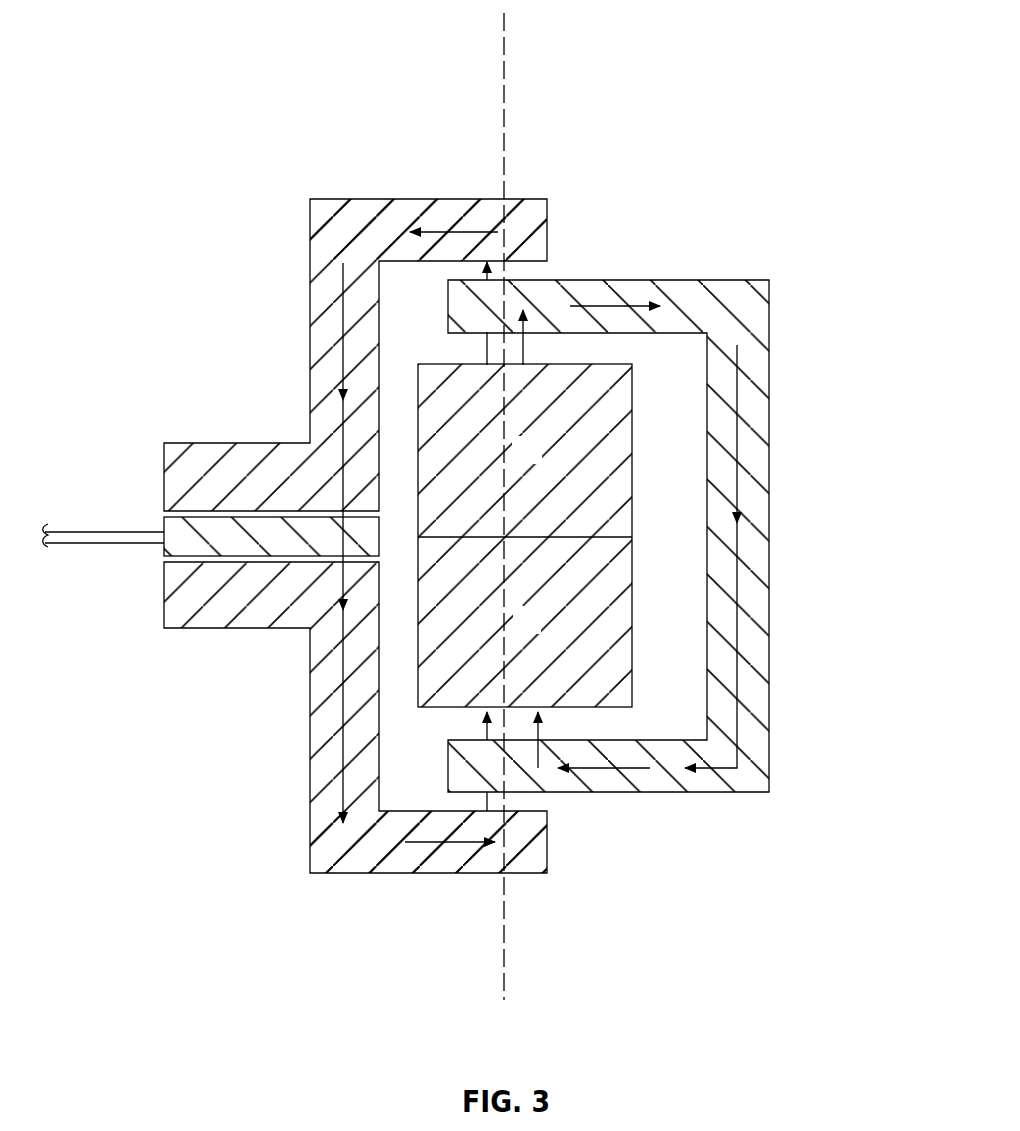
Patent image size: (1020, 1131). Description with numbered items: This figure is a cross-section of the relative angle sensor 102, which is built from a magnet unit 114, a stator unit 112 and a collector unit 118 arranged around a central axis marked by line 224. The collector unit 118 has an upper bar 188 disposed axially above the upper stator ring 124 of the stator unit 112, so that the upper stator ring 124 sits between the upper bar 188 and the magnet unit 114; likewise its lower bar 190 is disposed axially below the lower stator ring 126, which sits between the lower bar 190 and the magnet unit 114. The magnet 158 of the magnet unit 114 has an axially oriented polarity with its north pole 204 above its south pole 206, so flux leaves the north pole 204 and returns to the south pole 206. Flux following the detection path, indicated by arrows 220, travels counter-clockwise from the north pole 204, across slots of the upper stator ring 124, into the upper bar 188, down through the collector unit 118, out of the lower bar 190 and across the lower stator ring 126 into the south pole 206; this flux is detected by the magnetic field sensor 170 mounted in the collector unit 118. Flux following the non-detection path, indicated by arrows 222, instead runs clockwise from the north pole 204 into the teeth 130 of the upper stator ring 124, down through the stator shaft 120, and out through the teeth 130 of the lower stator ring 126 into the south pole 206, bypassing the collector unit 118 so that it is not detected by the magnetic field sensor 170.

The relative angle sensor 102 is at (841, 126).
The stator unit 112 is at (662, 546).
The magnet unit 114 is at (560, 535).
The collector unit 118 is at (359, 541).
The stator shaft 120 is at (745, 437).
The upper stator ring 124 is at (711, 280).
The lower stator ring 126 is at (670, 795).
The teeth 130 is at (605, 313).
The magnet 158 is at (560, 535).
The magnetic field sensor 170 is at (223, 543).
The upper bar 188 is at (480, 200).
The lower bar 190 is at (520, 858).
The north pole 204 is at (543, 398).
The south pole 206 is at (543, 607).
The detection path arrows 220 is at (343, 353).
The non-detection path arrows 222 is at (533, 352).
The line 224 is at (505, 31).